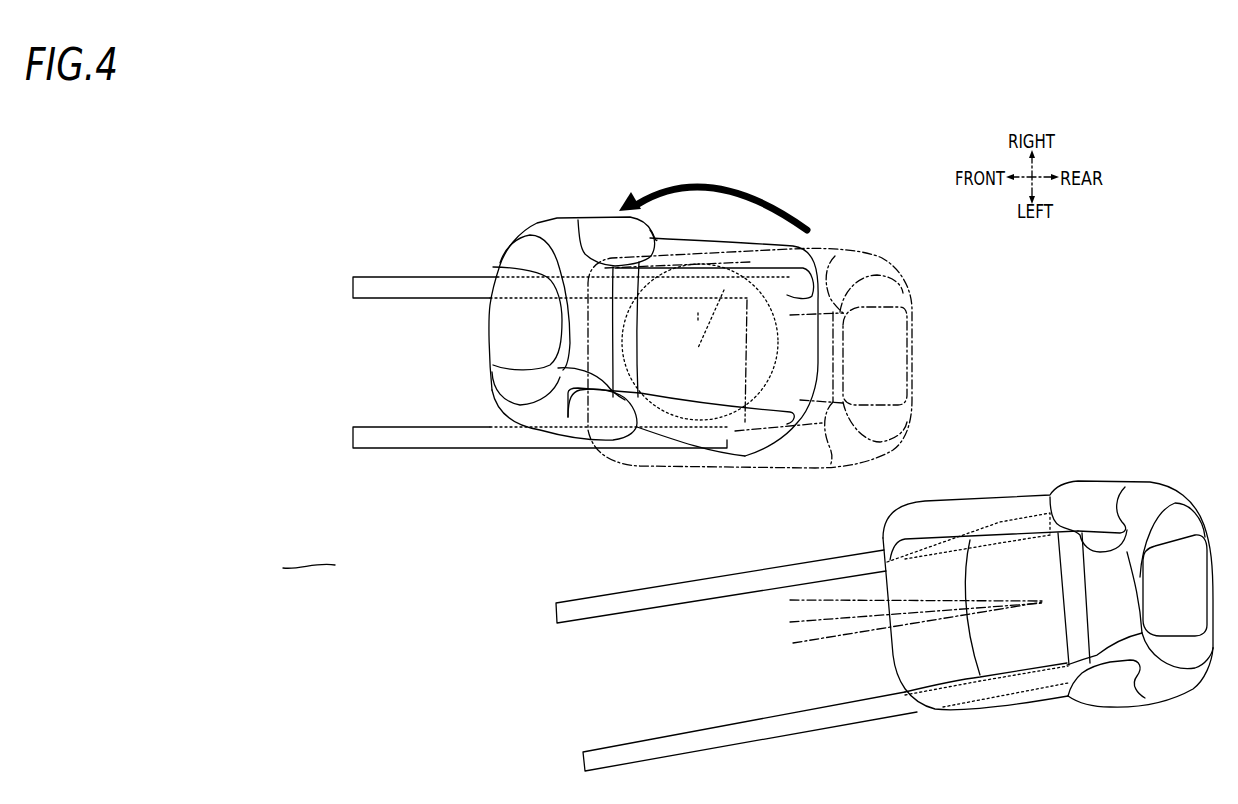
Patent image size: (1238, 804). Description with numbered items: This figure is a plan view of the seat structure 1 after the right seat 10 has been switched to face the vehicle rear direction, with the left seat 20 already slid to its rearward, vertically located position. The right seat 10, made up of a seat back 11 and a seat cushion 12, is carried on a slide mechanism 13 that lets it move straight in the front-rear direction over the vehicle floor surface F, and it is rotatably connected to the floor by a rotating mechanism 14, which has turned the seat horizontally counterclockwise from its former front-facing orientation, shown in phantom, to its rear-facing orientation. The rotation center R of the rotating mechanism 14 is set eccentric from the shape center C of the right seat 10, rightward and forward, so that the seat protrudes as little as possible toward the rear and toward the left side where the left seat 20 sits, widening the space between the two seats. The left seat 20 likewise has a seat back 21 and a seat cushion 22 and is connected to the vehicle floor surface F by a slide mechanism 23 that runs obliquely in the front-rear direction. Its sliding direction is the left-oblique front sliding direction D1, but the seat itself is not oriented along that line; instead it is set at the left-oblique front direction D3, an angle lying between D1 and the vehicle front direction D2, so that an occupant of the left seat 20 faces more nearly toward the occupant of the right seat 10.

The seat structure 1 is at (364, 243).
The right seat 10 is at (522, 228).
The seat back 11 is at (545, 410).
The seat cushion 12 is at (750, 437).
The slide mechanism 13 is at (473, 442).
The rotating mechanism 14 is at (698, 313).
The left seat 20 is at (1162, 695).
The seat back 21 is at (1177, 683).
The seat cushion 22 is at (957, 697).
The slide mechanism 23 is at (713, 742).
The rotation center R is at (724, 290).
The shape center C is at (747, 300).
The left-oblique front sliding direction D1 is at (819, 643).
The vehicle front direction D2 is at (817, 598).
The left-oblique front direction D3 is at (808, 617).
The vehicle floor surface F is at (298, 568).